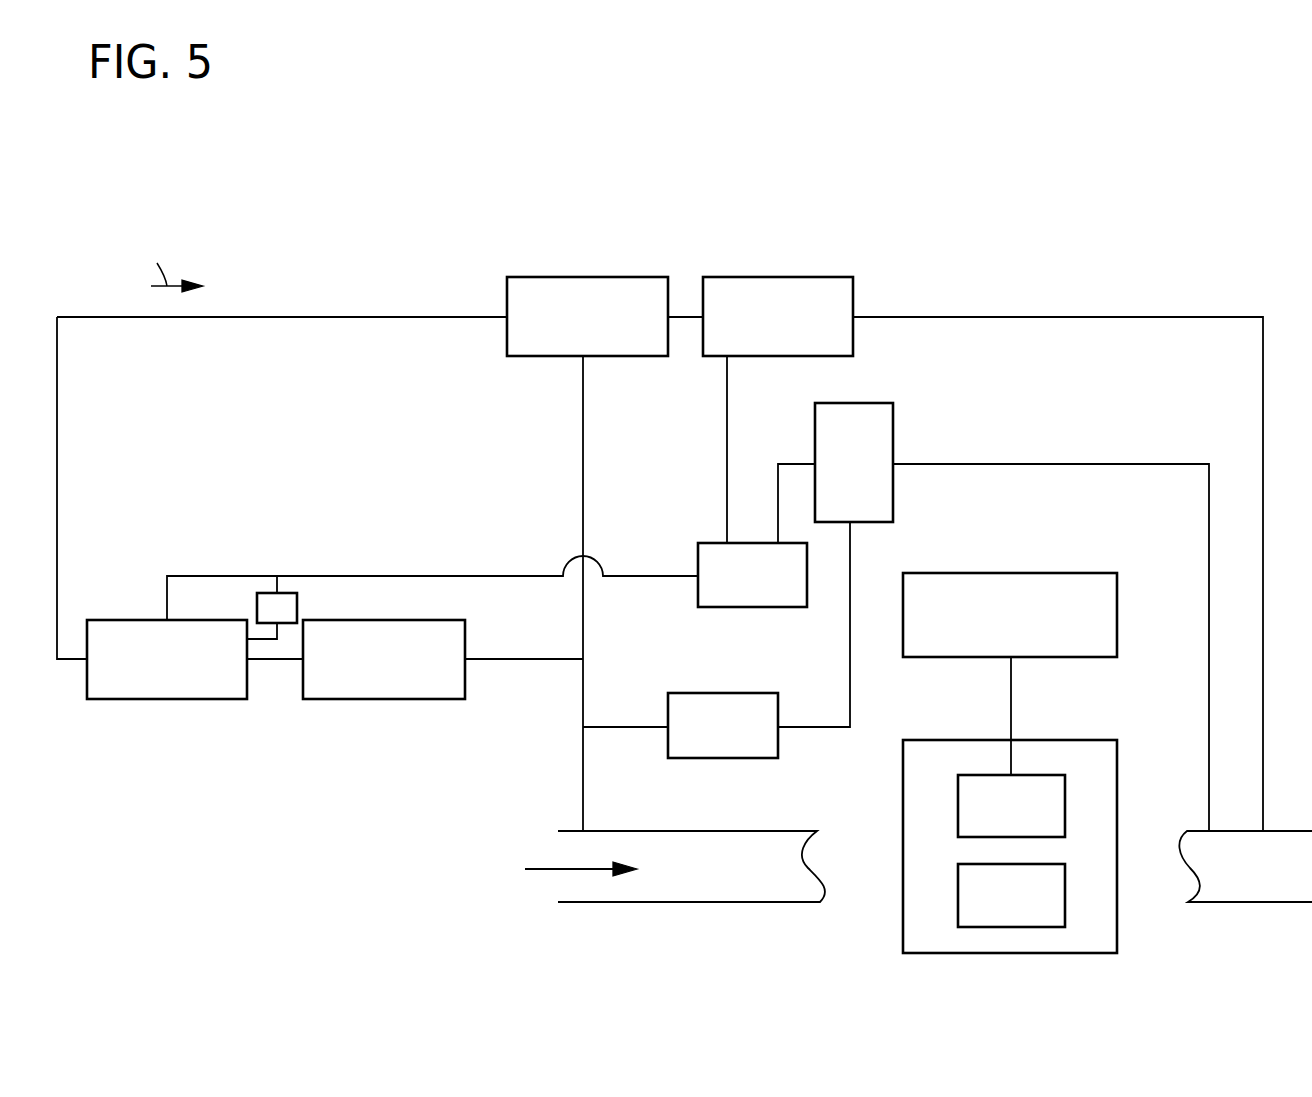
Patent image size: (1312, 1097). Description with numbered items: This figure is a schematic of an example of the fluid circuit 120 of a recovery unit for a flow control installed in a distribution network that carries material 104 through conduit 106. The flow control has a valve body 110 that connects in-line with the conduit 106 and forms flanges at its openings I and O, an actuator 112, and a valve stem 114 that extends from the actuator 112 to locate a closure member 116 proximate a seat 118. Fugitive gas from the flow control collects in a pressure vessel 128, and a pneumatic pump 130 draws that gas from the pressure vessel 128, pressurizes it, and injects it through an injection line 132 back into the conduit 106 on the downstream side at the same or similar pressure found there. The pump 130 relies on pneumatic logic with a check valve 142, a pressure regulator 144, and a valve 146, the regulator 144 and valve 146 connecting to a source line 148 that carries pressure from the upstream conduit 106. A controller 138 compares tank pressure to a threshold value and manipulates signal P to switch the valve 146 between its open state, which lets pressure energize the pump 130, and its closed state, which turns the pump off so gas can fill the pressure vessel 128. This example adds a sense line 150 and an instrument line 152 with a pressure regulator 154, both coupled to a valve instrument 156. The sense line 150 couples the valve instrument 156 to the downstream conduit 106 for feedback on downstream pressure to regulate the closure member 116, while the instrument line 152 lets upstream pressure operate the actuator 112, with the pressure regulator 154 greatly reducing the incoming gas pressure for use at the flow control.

The material 104 is at (550, 869).
The conduit 106 is at (778, 902).
The valve body 110 is at (960, 740).
The actuator 112 is at (1034, 628).
The valve stem 114 is at (1011, 695).
The closure member 116 is at (1036, 817).
The seat 118 is at (1036, 907).
The fluid circuit 120 is at (1145, 302).
The pressure vessel 128 is at (777, 586).
The pump 130 is at (802, 329).
The injection line 132 is at (993, 317).
The controller 138 is at (184, 672).
The check valve 142 is at (297, 601).
The pressure regulator 144 is at (403, 672).
The valve 146 is at (611, 329).
The source line 148 is at (583, 760).
The sense line 150 is at (1007, 464).
The instrument line 152 is at (627, 727).
The pressure regulator 154 is at (747, 737).
The valve instrument 156 is at (878, 472).